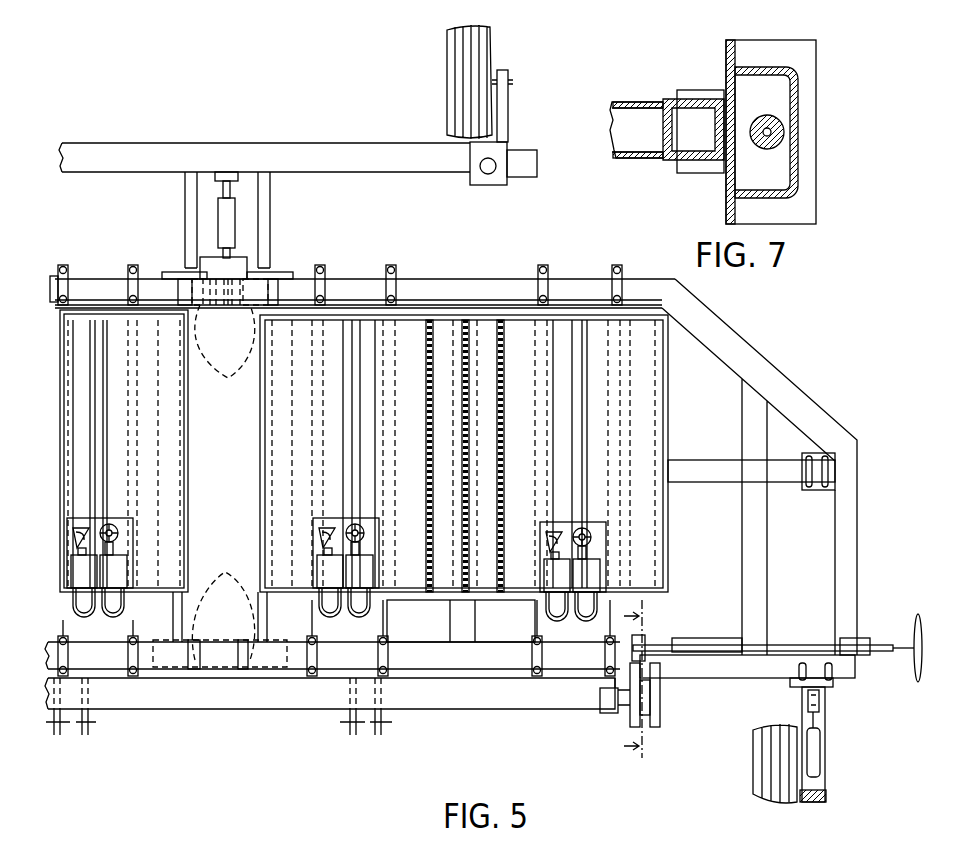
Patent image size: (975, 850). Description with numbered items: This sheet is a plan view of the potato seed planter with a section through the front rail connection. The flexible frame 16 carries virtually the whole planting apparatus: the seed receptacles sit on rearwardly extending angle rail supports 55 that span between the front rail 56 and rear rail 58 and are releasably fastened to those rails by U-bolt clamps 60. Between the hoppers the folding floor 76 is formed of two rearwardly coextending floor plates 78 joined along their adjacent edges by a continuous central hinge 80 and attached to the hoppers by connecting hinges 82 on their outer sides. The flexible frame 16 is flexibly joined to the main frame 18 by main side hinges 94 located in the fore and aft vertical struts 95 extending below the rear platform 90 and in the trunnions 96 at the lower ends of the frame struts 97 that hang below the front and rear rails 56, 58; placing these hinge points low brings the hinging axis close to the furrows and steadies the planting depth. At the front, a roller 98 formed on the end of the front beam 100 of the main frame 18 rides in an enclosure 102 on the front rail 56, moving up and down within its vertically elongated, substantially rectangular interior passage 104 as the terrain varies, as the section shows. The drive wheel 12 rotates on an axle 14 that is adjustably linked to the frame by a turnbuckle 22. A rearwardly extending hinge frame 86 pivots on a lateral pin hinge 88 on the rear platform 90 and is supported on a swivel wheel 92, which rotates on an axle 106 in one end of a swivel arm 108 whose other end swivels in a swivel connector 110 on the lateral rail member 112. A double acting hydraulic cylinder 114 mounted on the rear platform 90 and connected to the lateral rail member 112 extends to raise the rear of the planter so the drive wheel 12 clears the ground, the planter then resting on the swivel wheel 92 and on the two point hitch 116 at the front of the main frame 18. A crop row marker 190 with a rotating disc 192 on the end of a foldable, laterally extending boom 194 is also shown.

In FIG. 5, the hinge frame 86 is at (185, 132).
In FIG. 5, the swivel wheel 92 is at (447, 48).
In FIG. 5, the axle 106 is at (512, 82).
In FIG. 5, the swivel arm 108 is at (502, 104).
In FIG. 5, the swivel connector 110 is at (485, 186).
In FIG. 5, the lateral rail member 112 is at (333, 165).
In FIG. 5, the hydraulic cylinder 114 is at (218, 215).
In FIG. 5, the pin hinge 88 is at (250, 268).
In FIG. 5, the trunnion 96 is at (185, 272).
In FIG. 5, the frame strut 97 is at (308, 272).
In FIG. 5, the angle rail support 55 is at (160, 282).
In FIG. 5, the U-bolt clamp 60 is at (98, 268).
In FIG. 5, the flexible frame 16 is at (82, 243).
In FIG. 5, the rear rail 58 is at (460, 279).
In FIG. 5, the vertical strut 95 is at (223, 465).
In FIG. 5, the main side hinge 94 is at (227, 476).
In FIG. 5, the rear platform 90 is at (210, 480).
In FIG. 5, the folding floor 76 is at (423, 405).
In FIG. 5, the floor plate 78 is at (435, 422).
In FIG. 5, the central hinge 80 is at (469, 392).
In FIG. 5, the connecting hinge 82 is at (427, 446).
In FIG. 5, the main frame 18 is at (284, 717).
In FIG. 5, the front beam 100 is at (215, 692).
In FIG. 5, the two point hitch 116 is at (88, 730).
In FIG. 5, the front rail 56 is at (692, 665).
In FIG. 7, the front rail 56 is at (663, 160).
In FIG. 5, the boom 194 is at (870, 636).
In FIG. 5, the crop row marker 190 is at (871, 665).
In FIG. 5, the rotating disc 192 is at (915, 672).
In FIG. 5, the enclosure 102 is at (660, 716).
In FIG. 7, the enclosure 102 is at (817, 90).
In FIG. 5, the turnbuckle 22 is at (818, 748).
In FIG. 5, the drive wheel 12 is at (755, 742).
In FIG. 5, the axle 14 is at (800, 800).
In FIG. 7, the interior passage 104 is at (757, 85).
In FIG. 7, the roller 98 is at (775, 152).